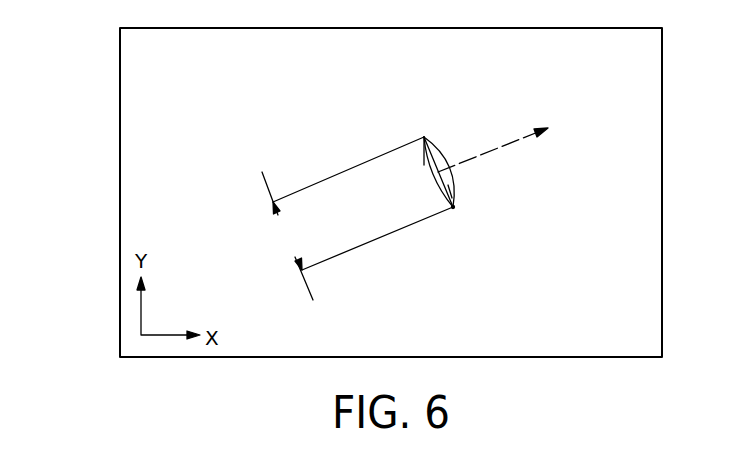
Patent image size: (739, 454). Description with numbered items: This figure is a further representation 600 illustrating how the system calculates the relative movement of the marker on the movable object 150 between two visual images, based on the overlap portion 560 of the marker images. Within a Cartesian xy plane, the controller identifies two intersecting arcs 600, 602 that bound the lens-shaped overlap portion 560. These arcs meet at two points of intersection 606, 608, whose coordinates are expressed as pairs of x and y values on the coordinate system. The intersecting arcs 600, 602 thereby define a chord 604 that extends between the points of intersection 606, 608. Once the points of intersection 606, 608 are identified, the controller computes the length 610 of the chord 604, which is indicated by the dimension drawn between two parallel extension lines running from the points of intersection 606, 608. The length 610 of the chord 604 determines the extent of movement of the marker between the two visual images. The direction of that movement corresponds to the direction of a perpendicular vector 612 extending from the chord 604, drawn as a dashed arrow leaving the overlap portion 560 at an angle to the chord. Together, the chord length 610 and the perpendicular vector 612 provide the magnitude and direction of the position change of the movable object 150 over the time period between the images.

The movable object 150 is at (137, 72).
The intersecting arc 600 is at (120, 150).
The overlap portion 560 is at (428, 172).
The intersecting arc 602 is at (450, 170).
The chord 604 is at (450, 192).
The point of intersection 606 is at (424, 137).
The point of intersection 608 is at (453, 208).
The length of chord 610 is at (357, 218).
The perpendicular vector 612 is at (493, 150).